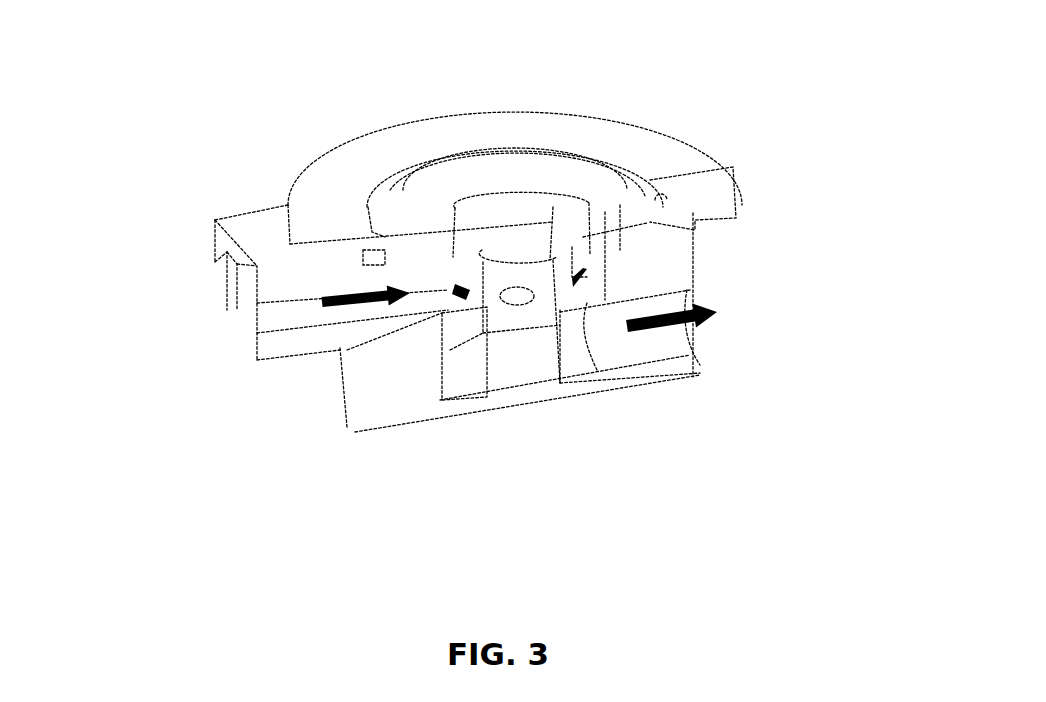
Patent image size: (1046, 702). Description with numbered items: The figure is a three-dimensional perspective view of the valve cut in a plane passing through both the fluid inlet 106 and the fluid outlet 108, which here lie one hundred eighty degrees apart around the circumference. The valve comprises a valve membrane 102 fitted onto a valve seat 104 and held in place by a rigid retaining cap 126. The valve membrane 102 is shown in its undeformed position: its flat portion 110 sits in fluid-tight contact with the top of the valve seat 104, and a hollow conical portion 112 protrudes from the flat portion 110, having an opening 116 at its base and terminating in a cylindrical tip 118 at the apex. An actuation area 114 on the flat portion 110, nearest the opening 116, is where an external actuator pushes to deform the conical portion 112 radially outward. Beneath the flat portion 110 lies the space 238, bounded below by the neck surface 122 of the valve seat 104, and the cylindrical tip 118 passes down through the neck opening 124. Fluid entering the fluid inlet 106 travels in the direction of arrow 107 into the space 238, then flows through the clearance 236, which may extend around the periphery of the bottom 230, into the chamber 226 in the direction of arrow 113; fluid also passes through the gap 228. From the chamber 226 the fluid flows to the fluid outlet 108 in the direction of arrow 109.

The valve membrane 102 is at (660, 208).
The valve seat 104 is at (683, 252).
The fluid inlet 106 is at (262, 315).
The arrow 107 is at (330, 297).
The fluid outlet 108 is at (670, 333).
The arrow 109 is at (637, 322).
The flat portion 110 is at (587, 194).
The conical portion 112 is at (490, 288).
The arrow 113 is at (460, 292).
The actuation area 114 is at (556, 207).
The opening 116 is at (518, 227).
The cylindrical tip 118 is at (535, 303).
The neck surface 122 is at (610, 252).
The neck opening 124 is at (580, 280).
The retaining cap 126 is at (305, 188).
The chamber 226 is at (457, 370).
The gap 228 is at (518, 323).
The bottom 230 is at (500, 385).
The clearance 236 is at (468, 292).
The space 238 is at (615, 238).